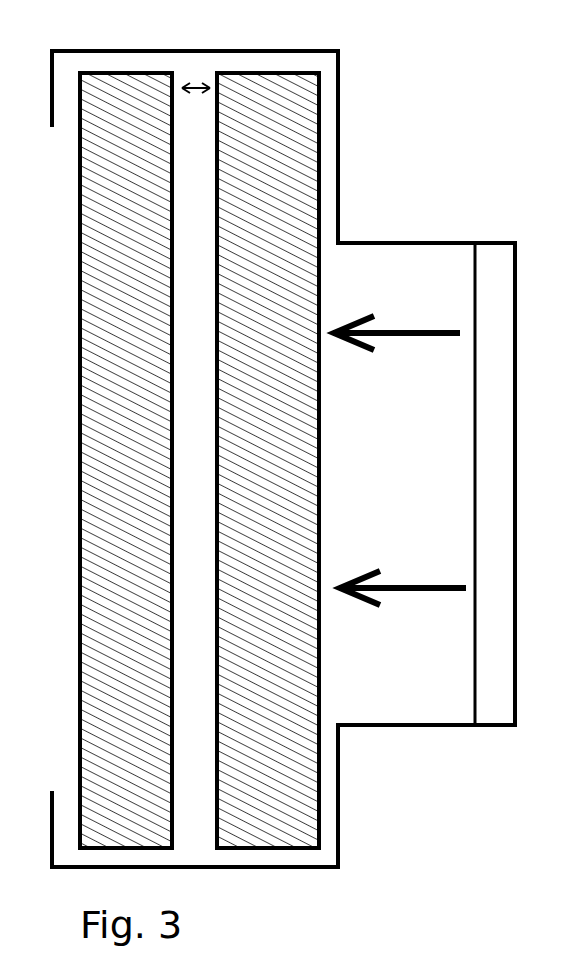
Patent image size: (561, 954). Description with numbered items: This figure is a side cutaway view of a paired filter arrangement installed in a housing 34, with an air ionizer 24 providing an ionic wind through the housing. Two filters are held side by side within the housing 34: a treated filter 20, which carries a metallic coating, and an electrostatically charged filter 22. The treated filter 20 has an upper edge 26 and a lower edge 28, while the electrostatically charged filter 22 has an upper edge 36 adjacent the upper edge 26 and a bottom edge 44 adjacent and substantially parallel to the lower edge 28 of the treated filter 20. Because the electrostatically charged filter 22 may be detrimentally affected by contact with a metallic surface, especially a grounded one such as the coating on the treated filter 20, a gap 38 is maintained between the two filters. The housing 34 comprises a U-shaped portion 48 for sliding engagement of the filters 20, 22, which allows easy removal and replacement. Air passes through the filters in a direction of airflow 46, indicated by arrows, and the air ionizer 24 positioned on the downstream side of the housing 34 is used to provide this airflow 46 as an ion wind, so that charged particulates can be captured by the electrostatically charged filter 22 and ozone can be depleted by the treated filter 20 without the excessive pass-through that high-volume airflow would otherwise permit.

The treated filter 20 is at (165, 72).
The electrostatically charged filter 22 is at (319, 72).
The air ionizer 24 is at (498, 242).
The upper edge 26 is at (96, 72).
The lower edge 28 is at (148, 850).
The housing 34 is at (340, 147).
The upper edge 36 is at (276, 72).
The gap 38 is at (196, 86).
The bottom edge 44 is at (282, 850).
The direction of airflow 46 is at (420, 330).
The U-shaped portion 48 is at (52, 115).